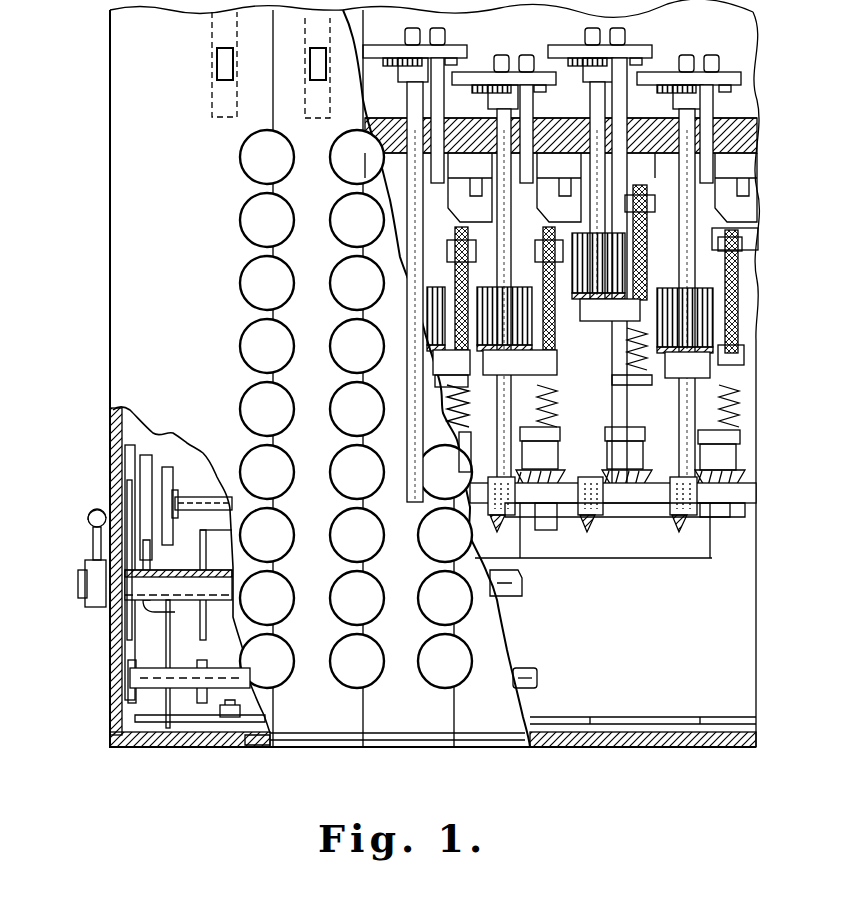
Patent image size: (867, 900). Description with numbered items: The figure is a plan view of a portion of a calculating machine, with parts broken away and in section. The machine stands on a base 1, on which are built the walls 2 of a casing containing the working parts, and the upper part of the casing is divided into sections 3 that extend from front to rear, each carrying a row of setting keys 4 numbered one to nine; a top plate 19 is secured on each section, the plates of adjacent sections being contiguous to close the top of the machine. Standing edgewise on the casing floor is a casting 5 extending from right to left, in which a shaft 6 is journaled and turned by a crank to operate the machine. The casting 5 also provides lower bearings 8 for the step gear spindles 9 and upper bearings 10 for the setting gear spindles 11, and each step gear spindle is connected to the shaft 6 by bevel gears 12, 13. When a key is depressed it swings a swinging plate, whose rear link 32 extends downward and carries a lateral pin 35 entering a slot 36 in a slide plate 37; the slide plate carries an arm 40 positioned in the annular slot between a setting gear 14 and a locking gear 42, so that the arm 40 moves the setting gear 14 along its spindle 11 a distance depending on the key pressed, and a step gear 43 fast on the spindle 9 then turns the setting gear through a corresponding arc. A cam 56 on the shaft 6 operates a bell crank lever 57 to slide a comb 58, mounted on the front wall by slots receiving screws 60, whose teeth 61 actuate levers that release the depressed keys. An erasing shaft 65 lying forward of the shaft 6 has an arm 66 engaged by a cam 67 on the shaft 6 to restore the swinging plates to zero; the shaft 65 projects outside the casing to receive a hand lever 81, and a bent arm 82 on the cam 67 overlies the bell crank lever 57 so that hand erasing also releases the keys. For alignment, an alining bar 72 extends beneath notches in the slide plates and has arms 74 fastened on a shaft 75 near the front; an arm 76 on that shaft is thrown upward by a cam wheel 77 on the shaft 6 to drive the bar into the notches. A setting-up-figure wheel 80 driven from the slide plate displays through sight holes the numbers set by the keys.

The base 1 is at (753, 668).
The walls of casing 2 is at (560, 768).
The sections of casing 3 is at (378, 758).
The setting keys 4 is at (284, 362).
The casting 5 is at (657, 548).
The shaft 6 is at (201, 499).
The lower bearings 8 is at (740, 503).
The step gear spindles 9 is at (725, 110).
The upper bearings 10 is at (655, 512).
The setting gear spindles 11 is at (685, 64).
The bevel gear 12 is at (700, 520).
The bevel gear 13 is at (735, 490).
The setting gear 14 is at (700, 300).
The top plate 19 is at (483, 762).
The link 32 is at (740, 245).
The lateral pin 35 is at (630, 205).
The slot 36 is at (725, 244).
The slide plate 37 is at (740, 302).
The arm 40 is at (745, 342).
The locking gear 42 is at (650, 384).
The step gear 43 is at (722, 195).
The cam 56 is at (125, 430).
The bell crank lever 57 is at (175, 712).
The comb 58 is at (760, 762).
The screws 60 is at (230, 717).
The teeth 61 is at (690, 722).
The shaft 65 is at (80, 590).
The arm 66 is at (148, 566).
The cam 67 is at (145, 465).
The alining bar 72 is at (215, 540).
The arms 74 is at (207, 641).
The shaft 75 is at (150, 686).
The arm 76 is at (128, 641).
The cam wheel 77 is at (165, 476).
The setting-up-figure wheel 80 is at (316, 80).
The hand lever 81 is at (88, 521).
The bent arm 82 is at (150, 618).